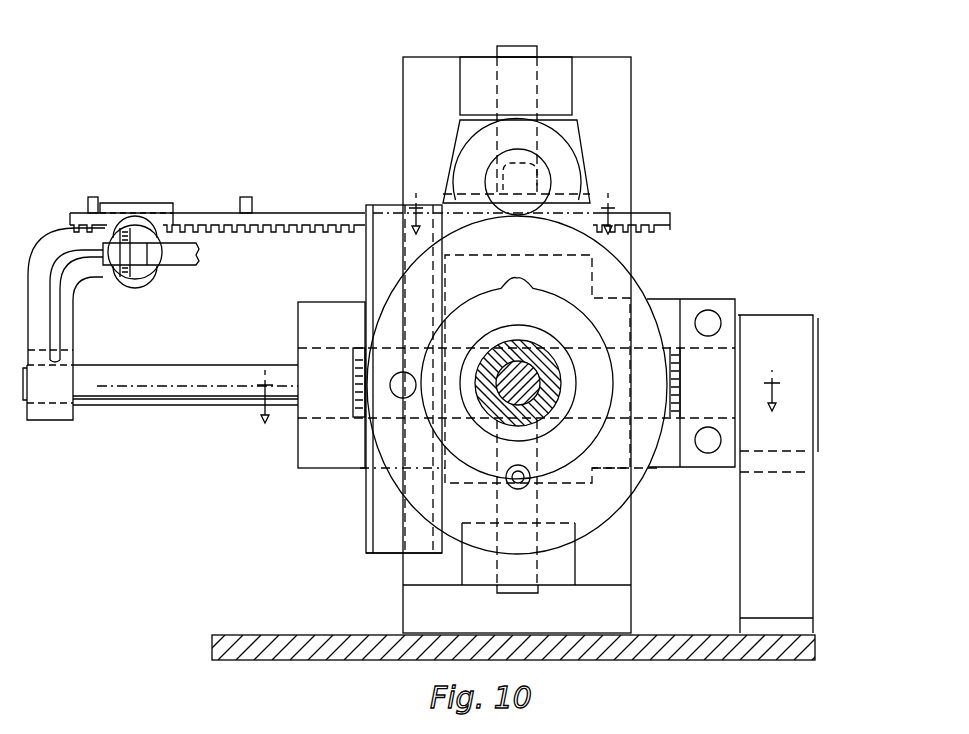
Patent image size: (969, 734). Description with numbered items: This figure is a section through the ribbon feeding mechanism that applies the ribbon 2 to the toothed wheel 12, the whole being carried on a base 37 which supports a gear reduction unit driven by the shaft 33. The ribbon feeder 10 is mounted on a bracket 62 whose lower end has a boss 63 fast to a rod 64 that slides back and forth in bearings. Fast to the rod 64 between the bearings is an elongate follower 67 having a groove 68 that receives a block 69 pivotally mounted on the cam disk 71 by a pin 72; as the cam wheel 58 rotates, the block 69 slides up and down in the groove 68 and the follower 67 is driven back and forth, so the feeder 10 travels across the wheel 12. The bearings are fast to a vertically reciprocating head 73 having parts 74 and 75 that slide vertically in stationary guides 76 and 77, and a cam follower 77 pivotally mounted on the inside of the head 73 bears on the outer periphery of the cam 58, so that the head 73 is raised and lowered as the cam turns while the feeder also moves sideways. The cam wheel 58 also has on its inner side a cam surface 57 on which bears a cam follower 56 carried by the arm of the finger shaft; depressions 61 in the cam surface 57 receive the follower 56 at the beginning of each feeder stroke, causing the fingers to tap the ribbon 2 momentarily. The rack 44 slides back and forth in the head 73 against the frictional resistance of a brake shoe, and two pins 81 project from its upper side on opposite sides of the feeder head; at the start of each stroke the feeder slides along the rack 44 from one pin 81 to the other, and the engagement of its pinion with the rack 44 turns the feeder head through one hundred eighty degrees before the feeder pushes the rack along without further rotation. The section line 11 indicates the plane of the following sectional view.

The part 74 is at (520, 50).
The stationary guide 76 is at (628, 97).
The vertically reciprocating head 73 is at (462, 133).
The cam follower 77 is at (545, 172).
The toothed wheel 12 is at (509, 199).
The pin 81 is at (93, 197).
The ribbon feeder 10 is at (138, 240).
The rack 44 is at (290, 216).
The ribbon 2 is at (188, 262).
The bracket 62 is at (73, 312).
The boss 63 is at (58, 420).
The rod 64 is at (168, 396).
The pin 72 is at (388, 381).
The elongate follower 67 is at (368, 493).
The groove 68 is at (372, 537).
The block 69 is at (387, 403).
The cam wheel 58 is at (641, 293).
The depression 61 is at (519, 284).
The cam surface 57 is at (598, 386).
The shaft 33 is at (515, 375).
The cam follower 56 is at (526, 470).
The section line 11 is at (516, 382).
The part 75 is at (817, 318).
The cam disk 71 is at (758, 528).
The base 37 is at (258, 622).